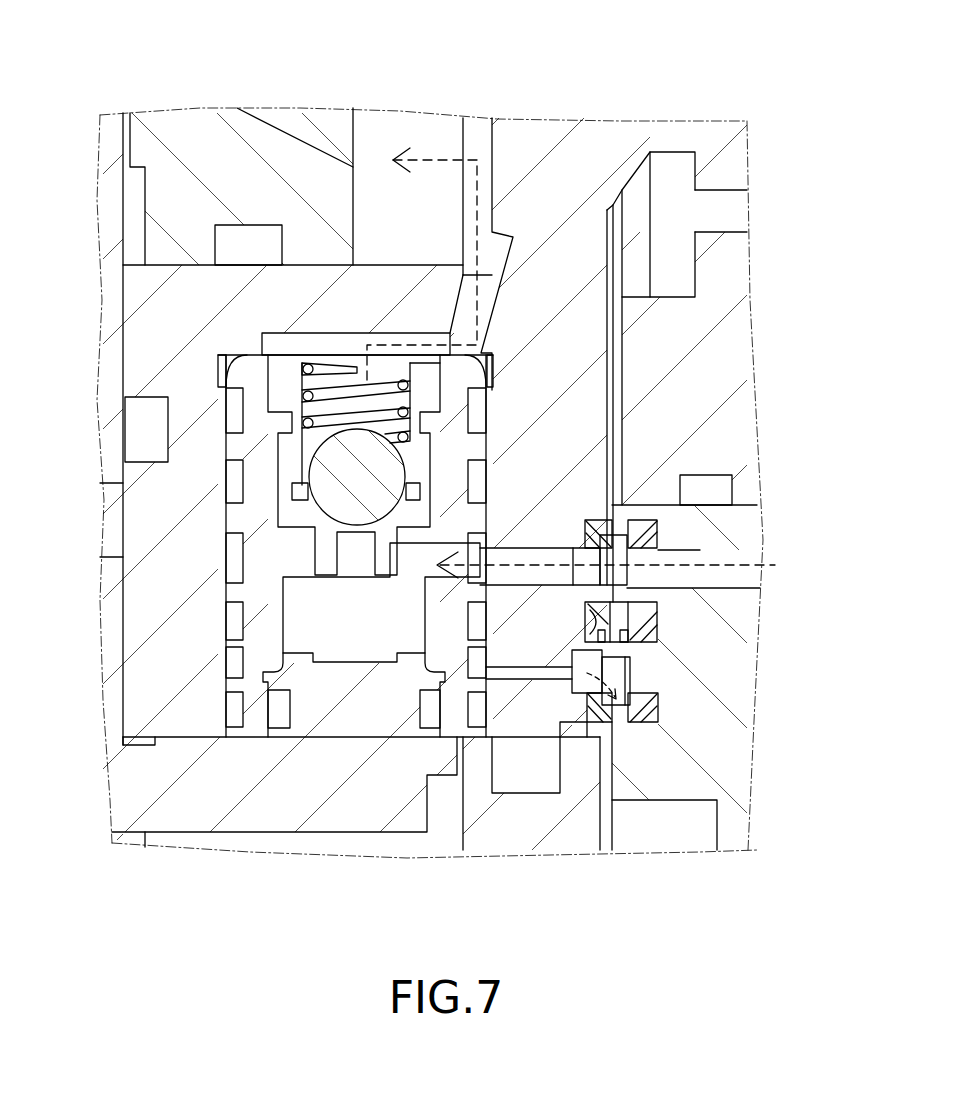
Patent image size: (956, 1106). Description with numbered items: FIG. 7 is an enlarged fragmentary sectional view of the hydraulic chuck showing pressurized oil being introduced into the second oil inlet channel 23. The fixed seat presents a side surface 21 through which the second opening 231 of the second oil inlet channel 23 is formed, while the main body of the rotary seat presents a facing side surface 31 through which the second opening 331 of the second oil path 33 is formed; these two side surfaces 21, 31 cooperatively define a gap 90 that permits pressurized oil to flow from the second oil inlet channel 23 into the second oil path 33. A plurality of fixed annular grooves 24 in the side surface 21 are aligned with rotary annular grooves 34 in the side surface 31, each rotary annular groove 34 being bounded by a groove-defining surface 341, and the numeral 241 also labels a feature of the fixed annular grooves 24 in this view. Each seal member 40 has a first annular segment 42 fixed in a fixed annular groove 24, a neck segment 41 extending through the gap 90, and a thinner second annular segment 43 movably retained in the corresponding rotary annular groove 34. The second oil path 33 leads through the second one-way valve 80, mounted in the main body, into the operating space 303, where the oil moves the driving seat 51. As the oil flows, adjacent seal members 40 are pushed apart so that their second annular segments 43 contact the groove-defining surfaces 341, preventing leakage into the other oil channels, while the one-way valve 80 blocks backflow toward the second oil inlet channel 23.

The side surface 21 is at (613, 738).
The second oil inlet channel 23 is at (660, 550).
The second opening 231 is at (712, 555).
The fixed annular grooves 24 is at (660, 607).
The lower seal ring 241 is at (660, 707).
The side surface 31 is at (607, 440).
The operating space 303 is at (373, 133).
The second oil path 33 is at (583, 572).
The second opening 331 is at (523, 577).
The rotary annular grooves 34 is at (590, 533).
The groove-defining surface 341 is at (583, 640).
The seal members 40 is at (657, 731).
The neck segment 41 is at (637, 520).
The first annular segment 42 is at (655, 515).
The second annular segment 43 is at (593, 517).
The driving seat 51 is at (197, 133).
The second one-way valve 80 is at (307, 467).
The gap 90 is at (614, 578).